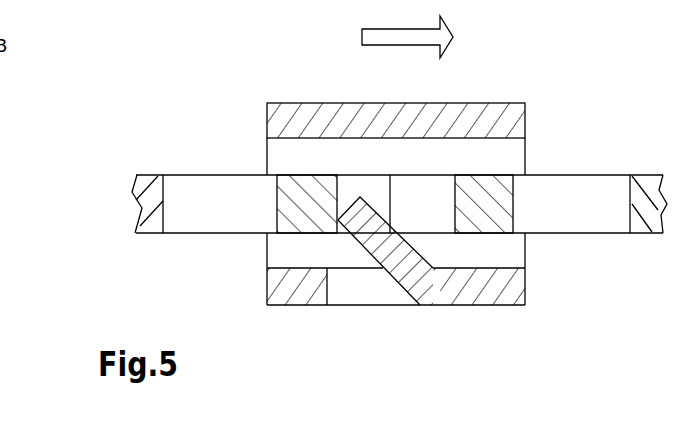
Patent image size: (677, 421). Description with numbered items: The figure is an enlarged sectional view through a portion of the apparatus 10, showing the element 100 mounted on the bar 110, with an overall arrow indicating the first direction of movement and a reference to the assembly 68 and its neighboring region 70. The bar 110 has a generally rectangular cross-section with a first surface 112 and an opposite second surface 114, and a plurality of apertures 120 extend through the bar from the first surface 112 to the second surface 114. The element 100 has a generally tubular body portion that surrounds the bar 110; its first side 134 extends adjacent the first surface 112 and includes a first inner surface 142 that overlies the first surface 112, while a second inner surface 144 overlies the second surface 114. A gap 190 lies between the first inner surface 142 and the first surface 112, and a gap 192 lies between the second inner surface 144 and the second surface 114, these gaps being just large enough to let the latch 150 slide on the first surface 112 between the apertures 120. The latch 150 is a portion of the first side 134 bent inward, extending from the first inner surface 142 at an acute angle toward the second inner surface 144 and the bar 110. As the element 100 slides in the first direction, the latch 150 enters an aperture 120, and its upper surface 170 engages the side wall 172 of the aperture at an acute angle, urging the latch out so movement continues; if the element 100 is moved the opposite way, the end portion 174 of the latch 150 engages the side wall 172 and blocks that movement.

The drive apparatus 10 is at (222, 68).
The housing assembly 68 is at (545, 292).
The shaft end portion 70 is at (153, 196).
The element 100 is at (323, 125).
The bar 110 is at (147, 205).
The first surface 112 is at (151, 237).
The second surface 114 is at (558, 174).
The apertures 120 is at (208, 215).
The first side 134 is at (430, 283).
The first inner surface 142 is at (478, 276).
The second inner surface 144 is at (504, 140).
The latch 150 is at (377, 238).
The upper surface 170 is at (390, 175).
The side wall 172 is at (455, 193).
The end portion 174 is at (354, 205).
The gap 190 is at (300, 250).
The gap 192 is at (353, 153).